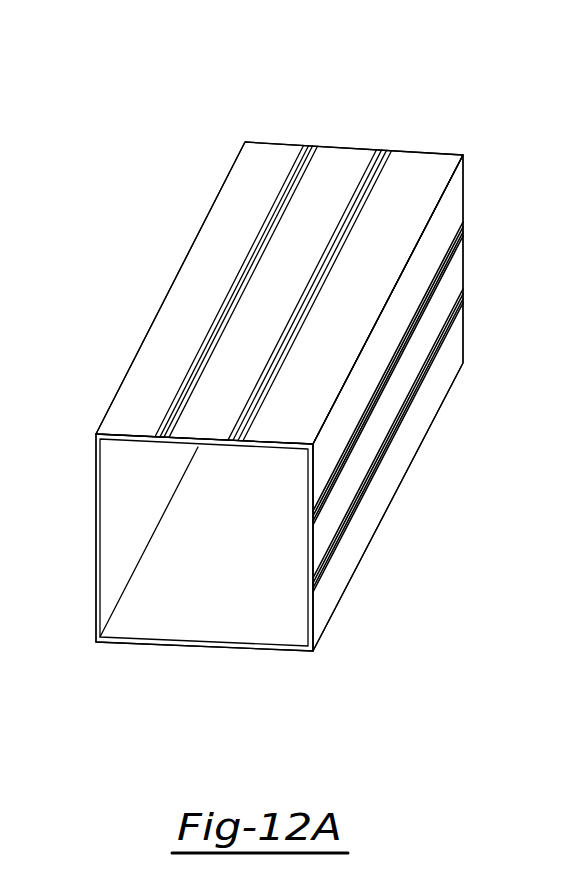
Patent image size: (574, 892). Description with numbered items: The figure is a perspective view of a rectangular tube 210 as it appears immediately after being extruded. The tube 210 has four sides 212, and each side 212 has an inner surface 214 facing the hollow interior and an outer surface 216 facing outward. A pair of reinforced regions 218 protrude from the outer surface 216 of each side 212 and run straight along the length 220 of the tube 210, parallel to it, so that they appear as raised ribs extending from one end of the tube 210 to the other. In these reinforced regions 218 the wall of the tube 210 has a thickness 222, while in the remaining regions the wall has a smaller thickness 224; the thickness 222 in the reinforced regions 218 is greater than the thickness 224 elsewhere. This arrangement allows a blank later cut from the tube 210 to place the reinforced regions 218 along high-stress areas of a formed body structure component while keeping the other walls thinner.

The rectangular tube 210 is at (403, 92).
The side 212 is at (261, 155).
The inner surface 214 is at (149, 519).
The outer surface 216 is at (401, 233).
The reinforced region 218 is at (378, 155).
The length 220 is at (314, 718).
The thickness 222 is at (372, 523).
The thickness 224 is at (188, 363).